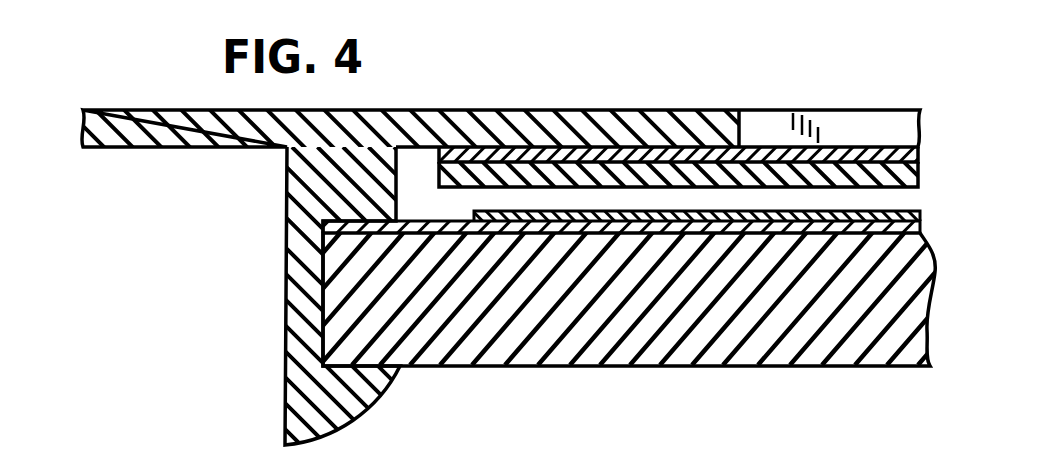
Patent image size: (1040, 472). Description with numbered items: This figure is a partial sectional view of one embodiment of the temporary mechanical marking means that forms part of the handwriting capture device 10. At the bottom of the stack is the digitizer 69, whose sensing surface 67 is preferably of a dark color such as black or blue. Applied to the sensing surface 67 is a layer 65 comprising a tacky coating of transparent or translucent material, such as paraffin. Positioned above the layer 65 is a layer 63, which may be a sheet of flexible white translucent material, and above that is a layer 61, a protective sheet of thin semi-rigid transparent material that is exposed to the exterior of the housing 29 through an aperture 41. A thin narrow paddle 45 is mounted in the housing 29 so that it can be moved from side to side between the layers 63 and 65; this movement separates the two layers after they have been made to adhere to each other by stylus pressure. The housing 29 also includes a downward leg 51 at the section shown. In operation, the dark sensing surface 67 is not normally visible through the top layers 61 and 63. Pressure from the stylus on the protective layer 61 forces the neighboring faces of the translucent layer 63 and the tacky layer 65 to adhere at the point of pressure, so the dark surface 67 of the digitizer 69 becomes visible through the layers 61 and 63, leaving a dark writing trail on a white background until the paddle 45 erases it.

The display assembly 10 is at (873, 82).
The housing 29 is at (512, 109).
The window 41 is at (741, 130).
The paddle 45 is at (920, 215).
The frame leg 51 is at (360, 408).
The layer 61 is at (918, 153).
The layer 63 is at (918, 179).
The layer 65 is at (922, 227).
The sensing surface 67 is at (773, 234).
The digitizer 69 is at (933, 315).